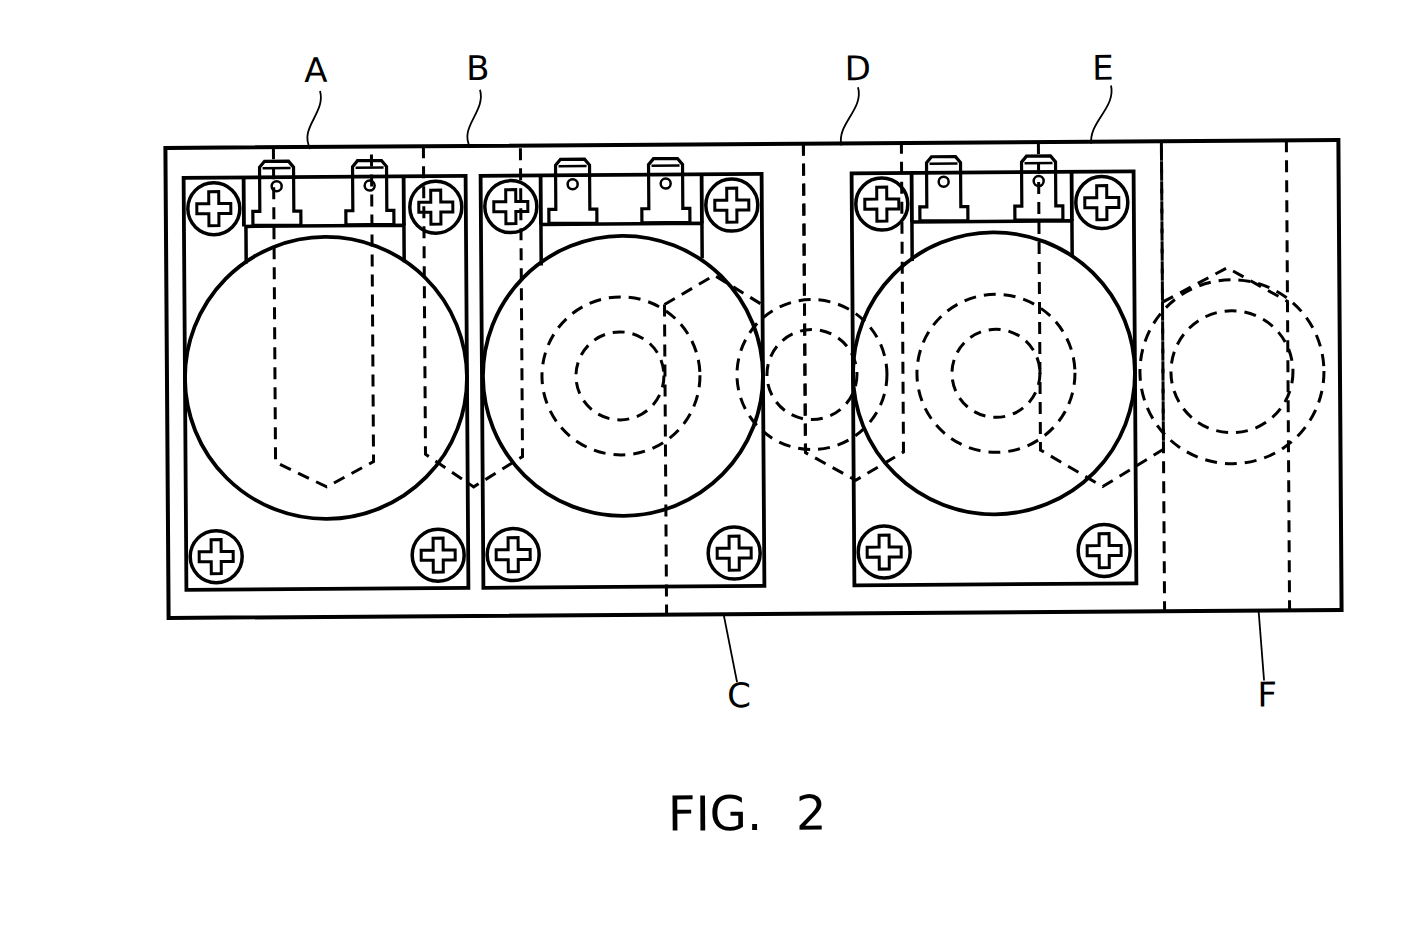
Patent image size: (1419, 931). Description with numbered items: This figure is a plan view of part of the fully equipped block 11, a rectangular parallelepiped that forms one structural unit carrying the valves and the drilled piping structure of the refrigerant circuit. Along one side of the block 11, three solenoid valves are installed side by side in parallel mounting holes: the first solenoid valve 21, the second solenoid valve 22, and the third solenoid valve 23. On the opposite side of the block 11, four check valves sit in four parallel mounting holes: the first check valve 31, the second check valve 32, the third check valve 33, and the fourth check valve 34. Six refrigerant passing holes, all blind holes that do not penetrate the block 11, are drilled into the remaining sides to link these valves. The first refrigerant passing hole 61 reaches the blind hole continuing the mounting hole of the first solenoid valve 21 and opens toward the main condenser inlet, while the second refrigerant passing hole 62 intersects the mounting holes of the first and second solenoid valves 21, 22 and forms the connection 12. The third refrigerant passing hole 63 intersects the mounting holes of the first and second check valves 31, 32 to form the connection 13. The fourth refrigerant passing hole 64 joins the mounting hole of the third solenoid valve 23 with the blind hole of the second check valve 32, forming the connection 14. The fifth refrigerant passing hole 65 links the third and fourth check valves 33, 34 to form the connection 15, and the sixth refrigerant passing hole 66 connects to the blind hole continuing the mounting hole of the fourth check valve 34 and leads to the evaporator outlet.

The block 11 is at (1325, 202).
The connection 12 is at (447, 425).
The connection 13 is at (752, 390).
The connection 14 is at (855, 393).
The connection 15 is at (1135, 395).
The first solenoid valve 21 is at (307, 518).
The second solenoid valve 22 is at (600, 512).
The third solenoid valve 23 is at (973, 513).
The first check valve 31 is at (628, 294).
The second check valve 32 is at (792, 295).
The third check valve 33 is at (1000, 295).
The fourth check valve 34 is at (1233, 273).
The first refrigerant passing hole 61 is at (275, 330).
The second refrigerant passing hole 62 is at (426, 423).
The third refrigerant passing hole 63 is at (665, 550).
The fourth refrigerant passing hole 64 is at (803, 170).
The fifth refrigerant passing hole 65 is at (1164, 165).
The sixth refrigerant passing hole 66 is at (1288, 532).